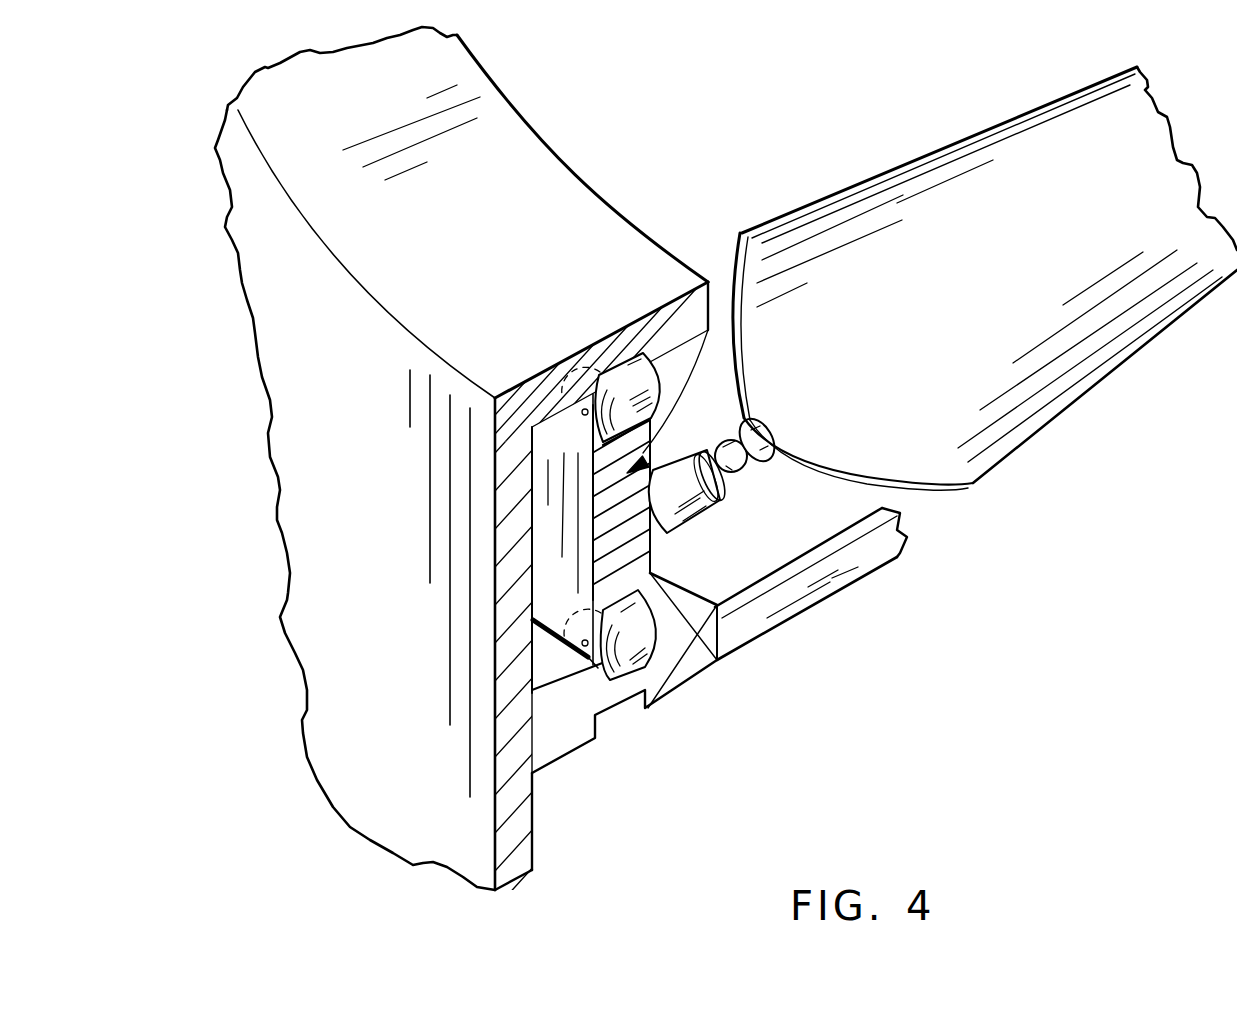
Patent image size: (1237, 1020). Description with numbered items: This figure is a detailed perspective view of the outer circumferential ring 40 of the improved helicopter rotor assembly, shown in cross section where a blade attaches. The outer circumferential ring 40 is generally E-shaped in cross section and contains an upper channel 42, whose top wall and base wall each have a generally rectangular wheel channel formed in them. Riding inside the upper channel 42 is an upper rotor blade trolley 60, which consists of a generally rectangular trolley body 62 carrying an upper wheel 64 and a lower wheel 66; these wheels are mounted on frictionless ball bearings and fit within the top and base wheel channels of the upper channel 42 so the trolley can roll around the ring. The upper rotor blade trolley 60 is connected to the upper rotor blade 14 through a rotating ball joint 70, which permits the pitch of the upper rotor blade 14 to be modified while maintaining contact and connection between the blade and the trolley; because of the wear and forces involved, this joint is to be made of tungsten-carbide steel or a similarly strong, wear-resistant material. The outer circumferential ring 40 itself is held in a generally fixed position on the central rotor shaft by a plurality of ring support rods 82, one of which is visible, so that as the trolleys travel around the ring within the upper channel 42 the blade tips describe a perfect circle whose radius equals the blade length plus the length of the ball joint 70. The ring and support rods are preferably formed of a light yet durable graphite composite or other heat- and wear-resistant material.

The upper rotor blade 14 is at (967, 393).
The outer circumferential ring 40 is at (497, 187).
The upper channel 42 is at (552, 632).
The upper rotor blade trolley 60 is at (742, 420).
The trolley body 62 is at (592, 522).
The upper wheel 64 is at (627, 387).
The lower wheel 66 is at (637, 640).
The rotating ball joint 70 is at (743, 463).
The ring support rod 82 is at (825, 580).